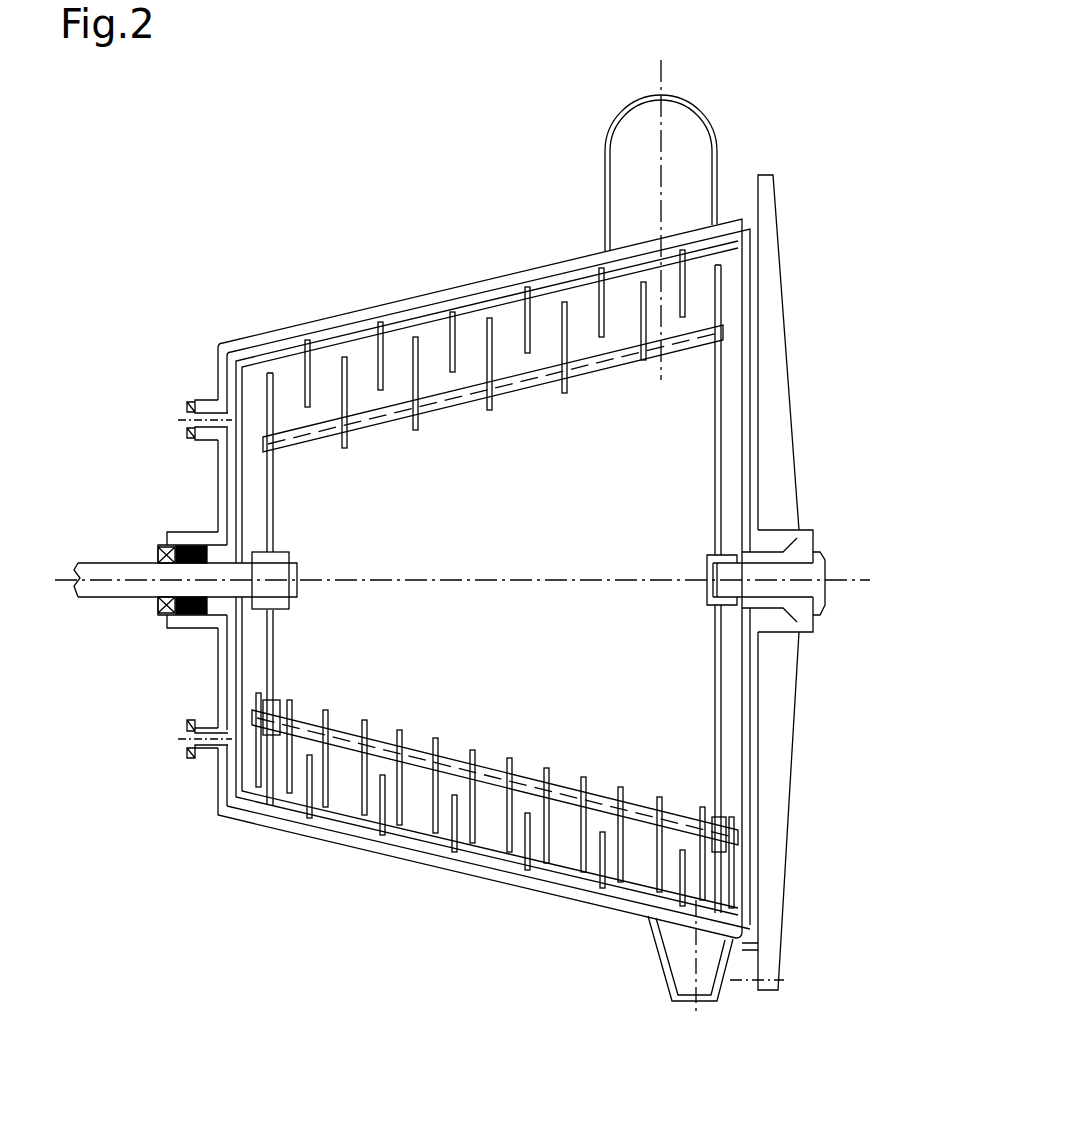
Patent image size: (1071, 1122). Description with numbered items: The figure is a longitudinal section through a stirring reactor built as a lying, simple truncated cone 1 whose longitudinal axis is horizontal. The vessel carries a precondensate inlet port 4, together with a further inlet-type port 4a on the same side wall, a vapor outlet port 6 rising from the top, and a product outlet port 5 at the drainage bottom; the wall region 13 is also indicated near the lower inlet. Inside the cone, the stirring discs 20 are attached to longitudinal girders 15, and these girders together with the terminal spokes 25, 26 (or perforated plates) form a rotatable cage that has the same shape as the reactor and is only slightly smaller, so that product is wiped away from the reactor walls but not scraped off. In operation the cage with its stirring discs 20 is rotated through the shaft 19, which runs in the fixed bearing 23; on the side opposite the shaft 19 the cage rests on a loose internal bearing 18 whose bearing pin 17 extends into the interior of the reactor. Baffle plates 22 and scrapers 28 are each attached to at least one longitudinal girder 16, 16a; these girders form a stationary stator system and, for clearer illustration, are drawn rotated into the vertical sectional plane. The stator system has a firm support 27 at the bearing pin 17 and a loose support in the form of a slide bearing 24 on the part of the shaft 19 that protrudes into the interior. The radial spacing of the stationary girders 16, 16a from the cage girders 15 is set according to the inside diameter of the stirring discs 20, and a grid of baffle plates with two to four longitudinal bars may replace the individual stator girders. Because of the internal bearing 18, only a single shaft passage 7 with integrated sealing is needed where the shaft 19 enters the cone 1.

The truncated cone 1 is at (247, 823).
The precondensate inlet port 4 is at (183, 418).
The inlet port 4a is at (183, 742).
The product outlet port 5 is at (682, 967).
The vapor outlet port 6 is at (618, 167).
The shaft passage 7 is at (157, 543).
The housing side wall 13 is at (222, 775).
The longitudinal girder 15 is at (540, 260).
The longitudinal girder 16 is at (457, 283).
The longitudinal girder 16a is at (620, 820).
The bearing pin 17 is at (822, 620).
The internal bearing 18 is at (805, 530).
The shaft 19 is at (160, 607).
The stirring disc 20 is at (330, 315).
The baffle plate 22 is at (423, 295).
The fixed bearing 23 is at (200, 622).
The slide bearing 24 is at (253, 548).
The terminal spoke 25 is at (758, 358).
The terminal spoke 26 is at (243, 650).
The firm support 27 is at (723, 552).
The scraper 28 is at (318, 838).